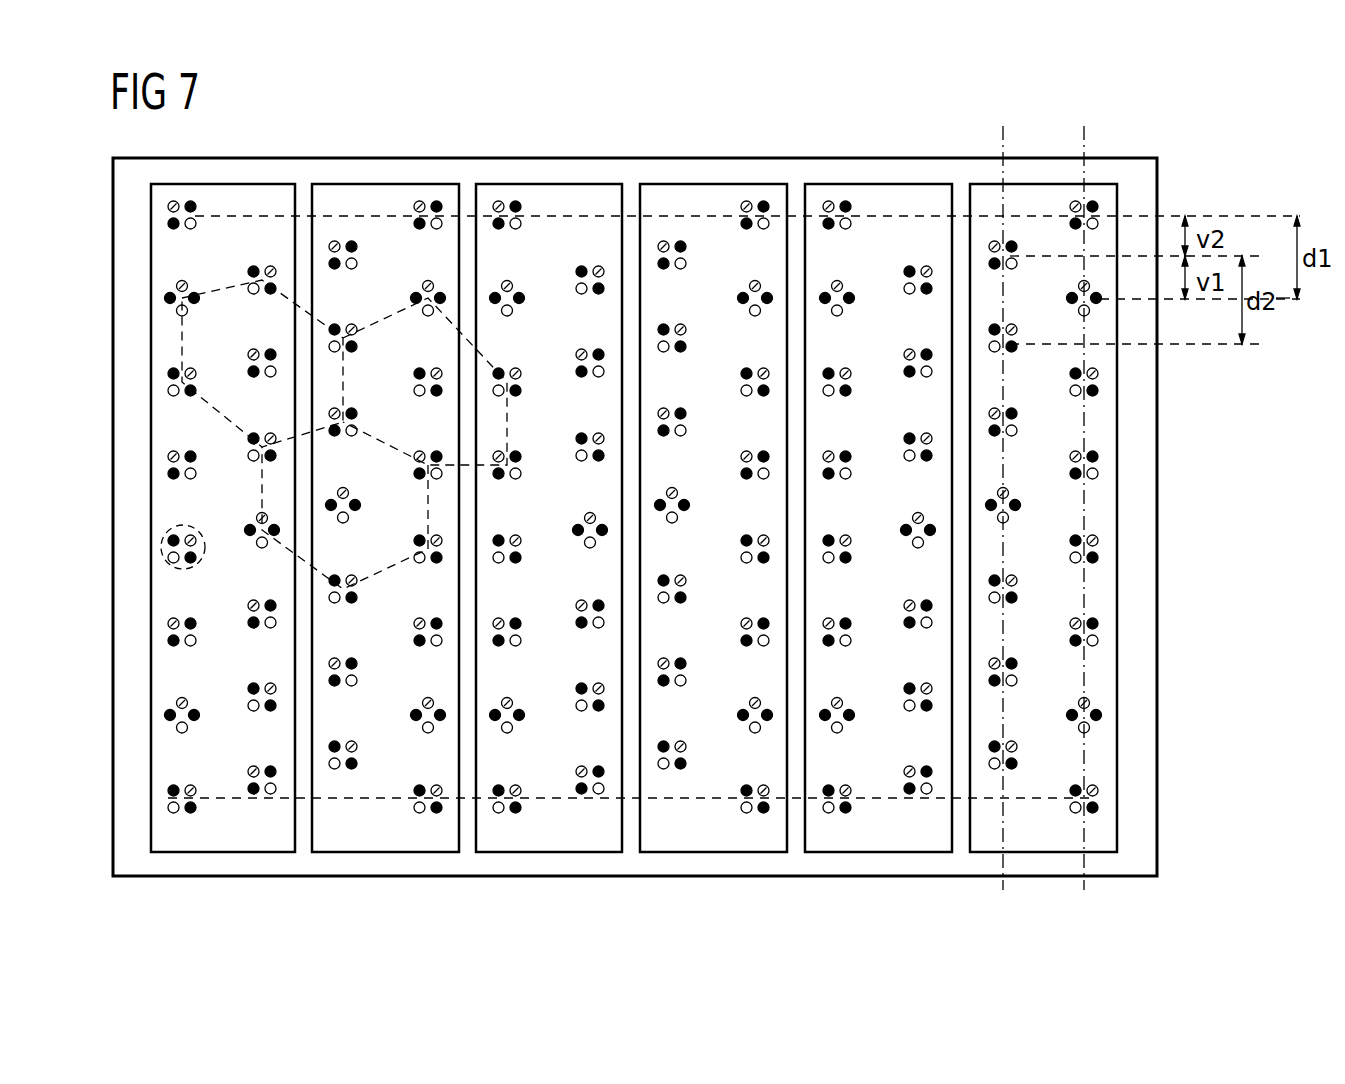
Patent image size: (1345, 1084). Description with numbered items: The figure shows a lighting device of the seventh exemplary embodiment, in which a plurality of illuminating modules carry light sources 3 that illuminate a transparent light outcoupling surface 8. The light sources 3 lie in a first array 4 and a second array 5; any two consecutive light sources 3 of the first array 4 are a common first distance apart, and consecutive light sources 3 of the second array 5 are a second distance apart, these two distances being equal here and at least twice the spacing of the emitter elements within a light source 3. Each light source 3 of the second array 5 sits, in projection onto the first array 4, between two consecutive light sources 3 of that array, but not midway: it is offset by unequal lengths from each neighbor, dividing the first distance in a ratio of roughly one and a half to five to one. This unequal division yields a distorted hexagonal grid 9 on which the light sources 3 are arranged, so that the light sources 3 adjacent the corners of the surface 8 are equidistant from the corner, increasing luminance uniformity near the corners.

The light source 3 is at (202, 527).
The first array 4 is at (1080, 132).
The second array 5 is at (998, 132).
The light outcoupling surface 8 is at (1140, 708).
The hexagonal grid 9 is at (232, 284).